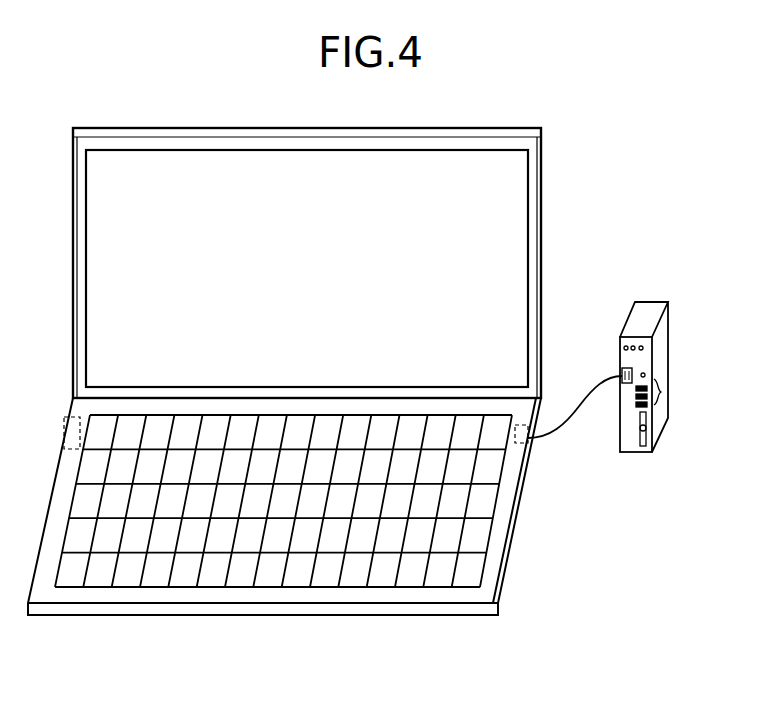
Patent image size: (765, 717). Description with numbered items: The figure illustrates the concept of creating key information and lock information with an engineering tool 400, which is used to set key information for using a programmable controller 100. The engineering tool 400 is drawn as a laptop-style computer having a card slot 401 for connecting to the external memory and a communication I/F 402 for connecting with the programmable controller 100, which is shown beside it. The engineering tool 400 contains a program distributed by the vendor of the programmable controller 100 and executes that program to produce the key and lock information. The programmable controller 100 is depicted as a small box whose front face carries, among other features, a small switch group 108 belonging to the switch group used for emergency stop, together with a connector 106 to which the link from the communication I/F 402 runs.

The engineering tool 400 is at (328, 624).
The card slot 401 is at (62, 431).
The communication I/F 402 is at (521, 444).
The programmable controller 100 is at (667, 415).
The connector cable 106 is at (621, 373).
The small switch group 108 is at (662, 393).